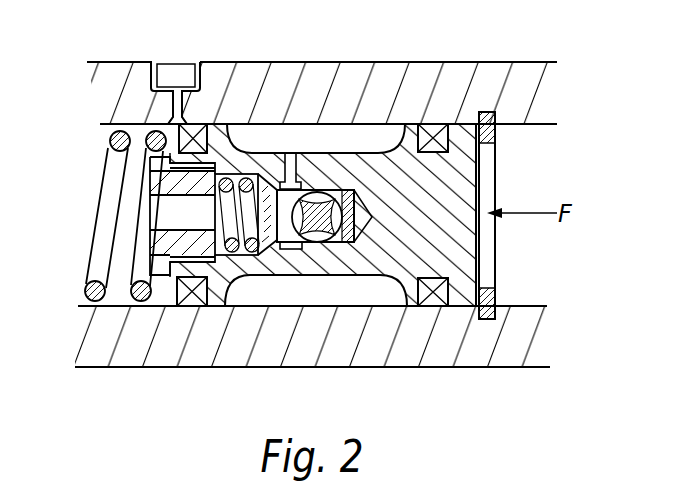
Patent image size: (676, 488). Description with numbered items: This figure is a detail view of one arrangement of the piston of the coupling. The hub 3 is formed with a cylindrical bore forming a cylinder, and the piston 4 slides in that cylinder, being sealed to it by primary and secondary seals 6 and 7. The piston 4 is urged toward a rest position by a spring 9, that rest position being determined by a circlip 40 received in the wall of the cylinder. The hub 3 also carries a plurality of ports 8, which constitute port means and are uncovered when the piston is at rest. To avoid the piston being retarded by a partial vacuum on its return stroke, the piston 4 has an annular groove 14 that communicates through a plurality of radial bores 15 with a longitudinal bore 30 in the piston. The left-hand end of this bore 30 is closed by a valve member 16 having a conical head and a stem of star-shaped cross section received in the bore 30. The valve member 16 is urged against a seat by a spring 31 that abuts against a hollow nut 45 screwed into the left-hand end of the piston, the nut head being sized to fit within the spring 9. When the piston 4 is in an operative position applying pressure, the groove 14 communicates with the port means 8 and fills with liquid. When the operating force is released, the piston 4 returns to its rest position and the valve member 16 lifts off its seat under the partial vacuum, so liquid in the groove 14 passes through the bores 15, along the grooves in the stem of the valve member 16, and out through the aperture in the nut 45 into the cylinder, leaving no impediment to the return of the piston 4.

The hub 3 is at (520, 77).
The piston 4 is at (440, 248).
The primary seal 6 is at (192, 135).
The secondary seal 7 is at (433, 135).
The ports 8 is at (175, 95).
The spring 9 is at (113, 160).
The annular groove 14 is at (358, 138).
The radial bores 15 is at (291, 157).
The valve member 16 is at (268, 190).
The longitudinal bore 30 is at (341, 242).
The spring 31 is at (228, 212).
The circlip 40 is at (489, 135).
The hollow nut 45 is at (160, 252).